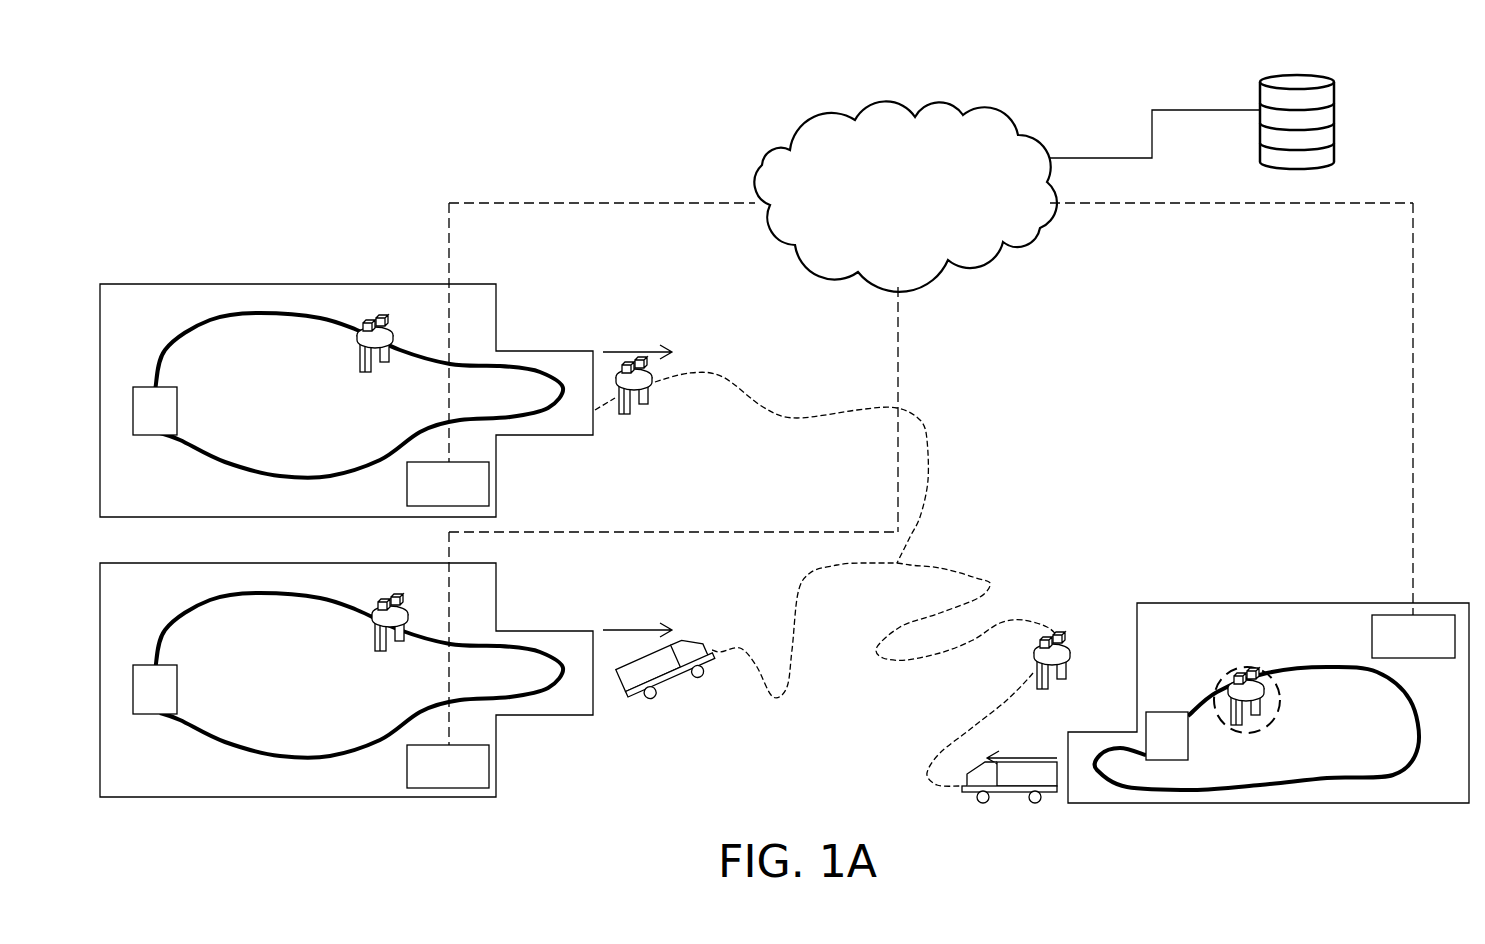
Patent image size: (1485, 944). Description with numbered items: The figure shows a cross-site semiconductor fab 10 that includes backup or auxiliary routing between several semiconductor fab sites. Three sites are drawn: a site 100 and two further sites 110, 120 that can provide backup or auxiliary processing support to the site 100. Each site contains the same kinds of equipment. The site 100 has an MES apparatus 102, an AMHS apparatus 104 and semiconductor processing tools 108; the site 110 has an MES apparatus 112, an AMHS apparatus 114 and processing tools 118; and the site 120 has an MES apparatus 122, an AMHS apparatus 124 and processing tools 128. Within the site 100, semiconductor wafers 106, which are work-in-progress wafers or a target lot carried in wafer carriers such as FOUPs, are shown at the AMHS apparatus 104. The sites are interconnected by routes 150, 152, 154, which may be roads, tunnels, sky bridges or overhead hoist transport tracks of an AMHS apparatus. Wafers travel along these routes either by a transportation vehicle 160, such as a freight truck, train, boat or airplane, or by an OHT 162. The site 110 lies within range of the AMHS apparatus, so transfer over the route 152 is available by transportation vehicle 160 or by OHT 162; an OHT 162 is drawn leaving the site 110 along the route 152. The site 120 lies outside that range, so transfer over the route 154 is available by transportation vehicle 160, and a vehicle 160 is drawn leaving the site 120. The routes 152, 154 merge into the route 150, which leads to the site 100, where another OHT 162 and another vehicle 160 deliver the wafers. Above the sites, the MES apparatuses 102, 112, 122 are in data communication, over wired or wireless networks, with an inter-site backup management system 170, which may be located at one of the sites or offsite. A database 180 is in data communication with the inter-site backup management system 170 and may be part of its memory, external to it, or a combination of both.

The cross-site semiconductor fab 10 is at (252, 115).
The semiconductor fab site 100 is at (1252, 603).
The MES apparatus 102 is at (1372, 636).
The AMHS apparatus 104 is at (1237, 677).
The semiconductor wafers 106 is at (1280, 715).
The semiconductor processing tools 108 is at (1167, 712).
The semiconductor fab site 110 is at (195, 284).
The MES apparatus 112 is at (405, 497).
The AMHS apparatus 114 is at (357, 353).
The semiconductor processing tools 118 is at (179, 407).
The semiconductor fab site 120 is at (187, 797).
The MES apparatus 122 is at (405, 777).
The AMHS apparatus 124 is at (367, 640).
The semiconductor processing tools 128 is at (179, 687).
The route 150 is at (963, 570).
The route 152 is at (928, 450).
The route 154 is at (795, 660).
The transportation vehicle 160 is at (672, 680).
The OHT 162 is at (653, 393).
The inter-site backup management system 170 is at (942, 105).
The database 180 is at (1337, 90).